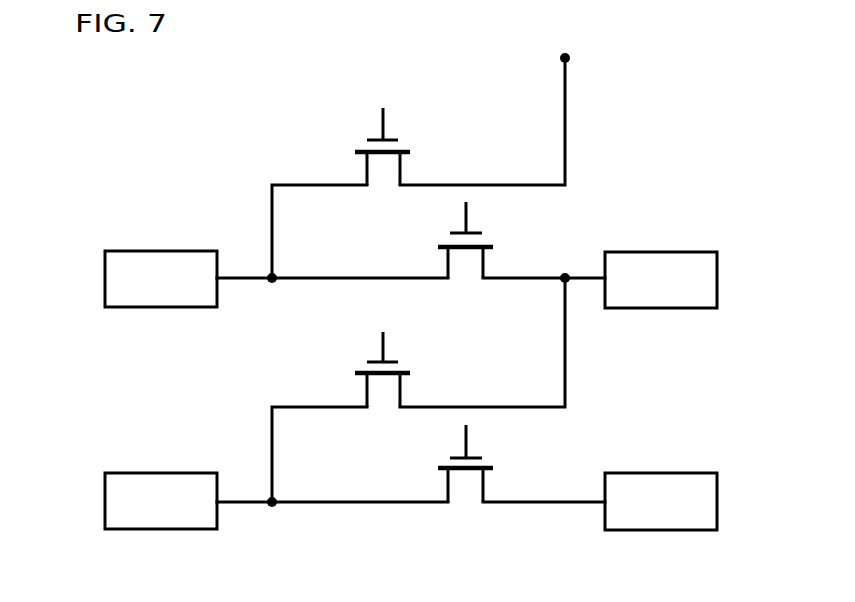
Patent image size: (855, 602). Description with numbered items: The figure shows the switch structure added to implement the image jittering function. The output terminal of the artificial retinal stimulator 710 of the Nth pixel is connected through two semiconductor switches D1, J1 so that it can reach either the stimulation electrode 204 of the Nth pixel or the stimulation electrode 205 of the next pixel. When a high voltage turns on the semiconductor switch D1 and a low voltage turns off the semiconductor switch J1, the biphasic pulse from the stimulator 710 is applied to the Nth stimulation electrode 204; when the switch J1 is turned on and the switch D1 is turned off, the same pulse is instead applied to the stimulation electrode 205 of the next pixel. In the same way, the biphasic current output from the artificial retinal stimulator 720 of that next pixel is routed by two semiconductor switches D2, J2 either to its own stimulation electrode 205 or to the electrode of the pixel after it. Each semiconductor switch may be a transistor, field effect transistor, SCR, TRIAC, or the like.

The artificial retinal stimulator of the (N+1)th pixel 720 is at (103, 275).
The artificial retinal stimulator of the Nth pixel 710 is at (103, 508).
The stimulation electrode of the (N+1)th pixel 205 is at (718, 279).
The stimulation electrode of the Nth pixel 204 is at (718, 500).
The semiconductor switch J2 is at (382, 144).
The semiconductor switch D2 is at (470, 238).
The semiconductor switch J1 is at (382, 368).
The semiconductor switch D1 is at (470, 462).